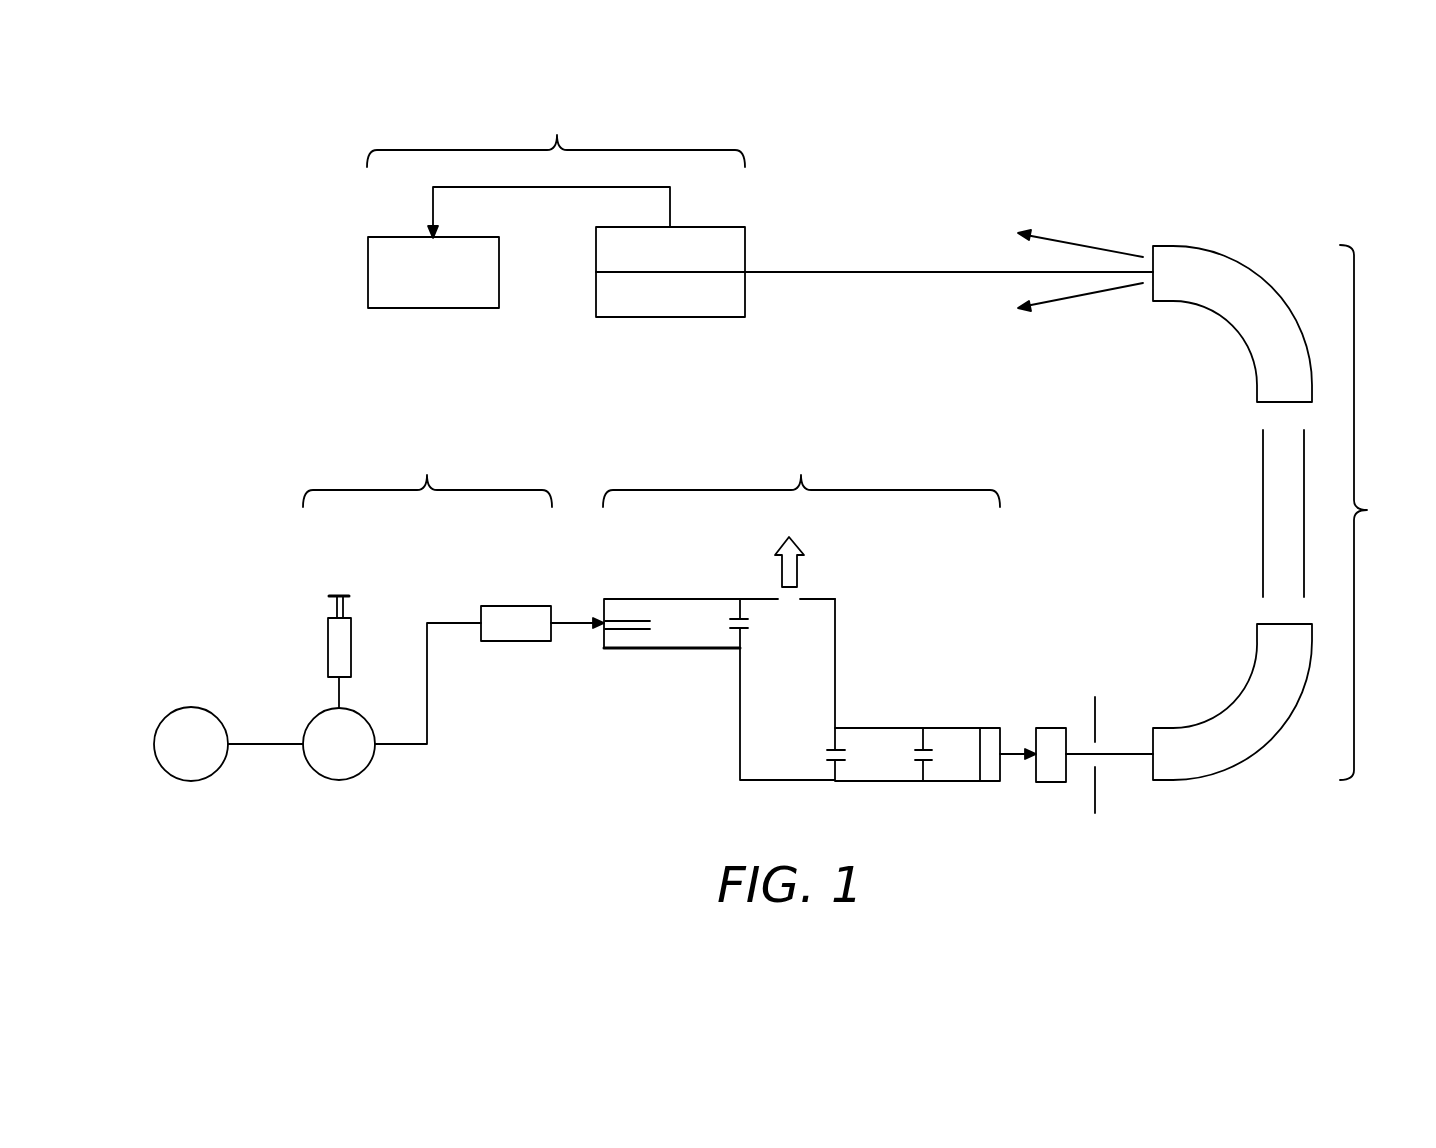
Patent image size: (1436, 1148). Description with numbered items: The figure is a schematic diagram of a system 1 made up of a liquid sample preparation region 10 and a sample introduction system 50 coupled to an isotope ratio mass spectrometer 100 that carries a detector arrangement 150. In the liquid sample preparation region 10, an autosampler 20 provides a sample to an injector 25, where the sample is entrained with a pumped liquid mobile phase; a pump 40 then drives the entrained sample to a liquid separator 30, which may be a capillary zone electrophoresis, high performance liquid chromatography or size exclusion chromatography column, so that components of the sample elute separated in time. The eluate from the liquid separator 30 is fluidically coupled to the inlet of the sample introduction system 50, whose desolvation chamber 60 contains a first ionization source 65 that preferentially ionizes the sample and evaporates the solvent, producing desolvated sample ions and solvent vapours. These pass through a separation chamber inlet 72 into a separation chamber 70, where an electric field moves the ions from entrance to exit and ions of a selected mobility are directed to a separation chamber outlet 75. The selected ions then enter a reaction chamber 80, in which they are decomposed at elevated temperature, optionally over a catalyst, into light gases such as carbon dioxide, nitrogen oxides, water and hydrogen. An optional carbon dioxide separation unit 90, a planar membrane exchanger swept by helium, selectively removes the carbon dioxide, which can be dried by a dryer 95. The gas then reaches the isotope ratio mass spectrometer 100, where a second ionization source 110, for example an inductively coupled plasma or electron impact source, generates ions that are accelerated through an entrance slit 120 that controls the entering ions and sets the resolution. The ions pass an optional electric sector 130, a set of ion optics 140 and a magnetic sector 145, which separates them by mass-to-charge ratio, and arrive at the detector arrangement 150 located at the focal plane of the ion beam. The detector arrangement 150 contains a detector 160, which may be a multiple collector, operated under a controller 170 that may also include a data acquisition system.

The system 1 is at (965, 153).
The liquid sample preparation region 10 is at (427, 478).
The autosampler 20 is at (325, 635).
The injector 25 is at (340, 780).
The liquid separator 30 is at (532, 643).
The pump 40 is at (192, 781).
The sample introduction system 50 is at (801, 478).
The desolvation chamber 60 is at (660, 608).
The first ionization source 65 is at (630, 630).
The separation chamber 70 is at (750, 723).
The separation chamber inlet 72 is at (728, 610).
The separation chamber outlet 75 is at (828, 762).
The reaction chamber 80 is at (882, 737).
The CO2 separation unit 90 is at (953, 737).
The dryer 95 is at (990, 775).
The isotope ratio mass spectrometer 100 is at (1377, 512).
The second ionization source 110 is at (1050, 728).
The entrance slit 120 is at (1098, 707).
The electric sector 130 is at (1252, 738).
The ion optics 140 is at (1272, 513).
The magnetic sector 145 is at (1253, 287).
The detector arrangement 150 is at (556, 173).
The detector 160 is at (712, 317).
The controller 170 is at (470, 308).